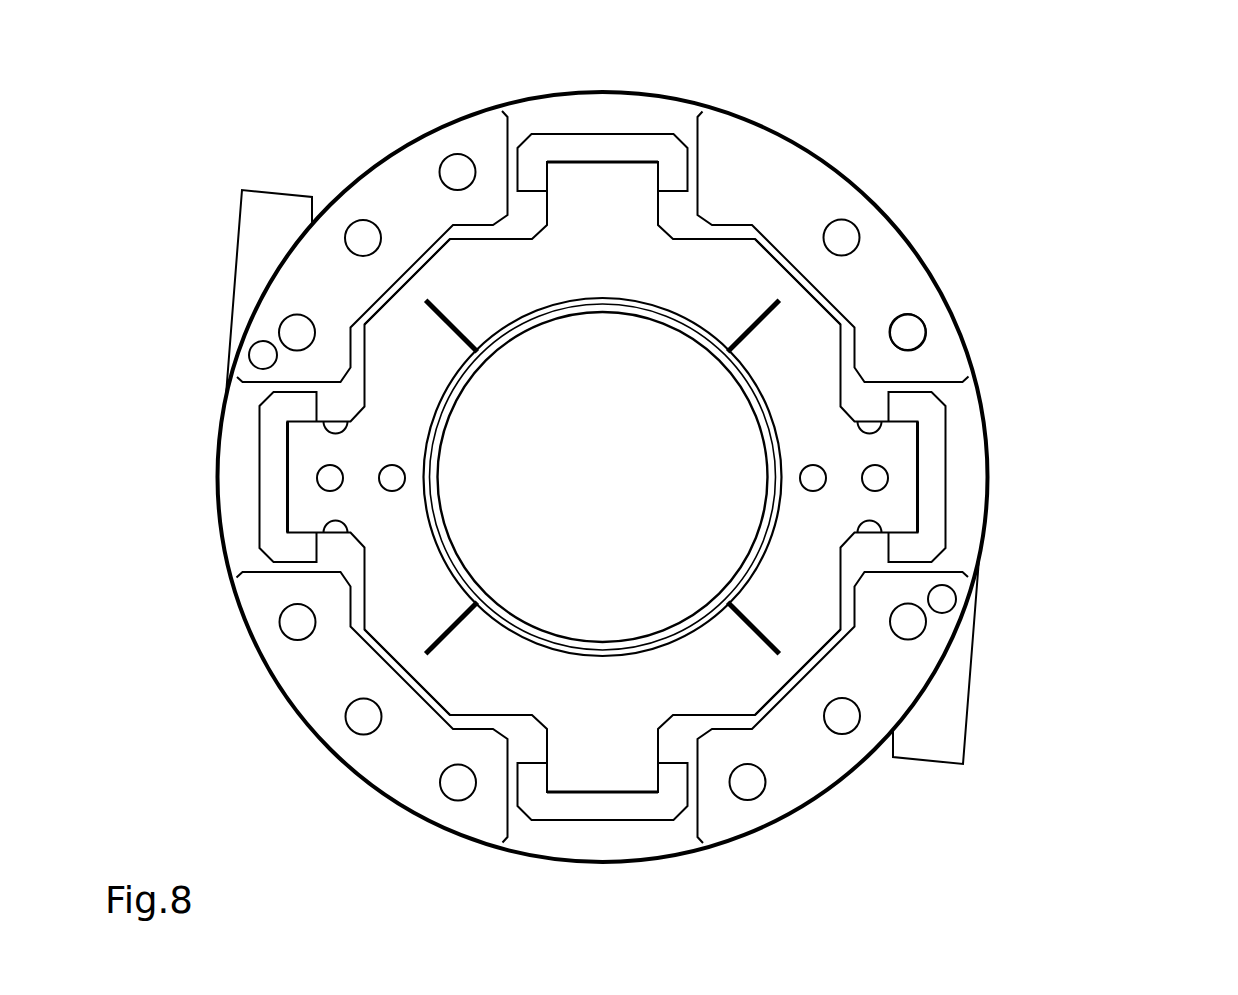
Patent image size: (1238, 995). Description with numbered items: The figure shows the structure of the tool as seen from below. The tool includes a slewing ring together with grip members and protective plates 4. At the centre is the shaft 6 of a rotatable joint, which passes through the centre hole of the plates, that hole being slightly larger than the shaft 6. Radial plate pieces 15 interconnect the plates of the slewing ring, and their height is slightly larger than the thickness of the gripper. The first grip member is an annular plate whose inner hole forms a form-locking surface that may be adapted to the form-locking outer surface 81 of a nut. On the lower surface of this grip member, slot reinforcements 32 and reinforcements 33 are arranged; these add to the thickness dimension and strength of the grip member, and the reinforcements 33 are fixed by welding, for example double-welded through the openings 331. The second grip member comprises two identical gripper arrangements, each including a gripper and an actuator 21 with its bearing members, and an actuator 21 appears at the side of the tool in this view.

The form-locking outer surface 81 is at (412, 660).
The slot reinforcements 32 is at (635, 155).
The reinforcements 33 is at (802, 173).
The openings 331 is at (910, 333).
The shaft 6 is at (440, 557).
The radial plate pieces 15 is at (748, 640).
The actuator 21 is at (269, 233).
The protective plates 4 is at (990, 503).